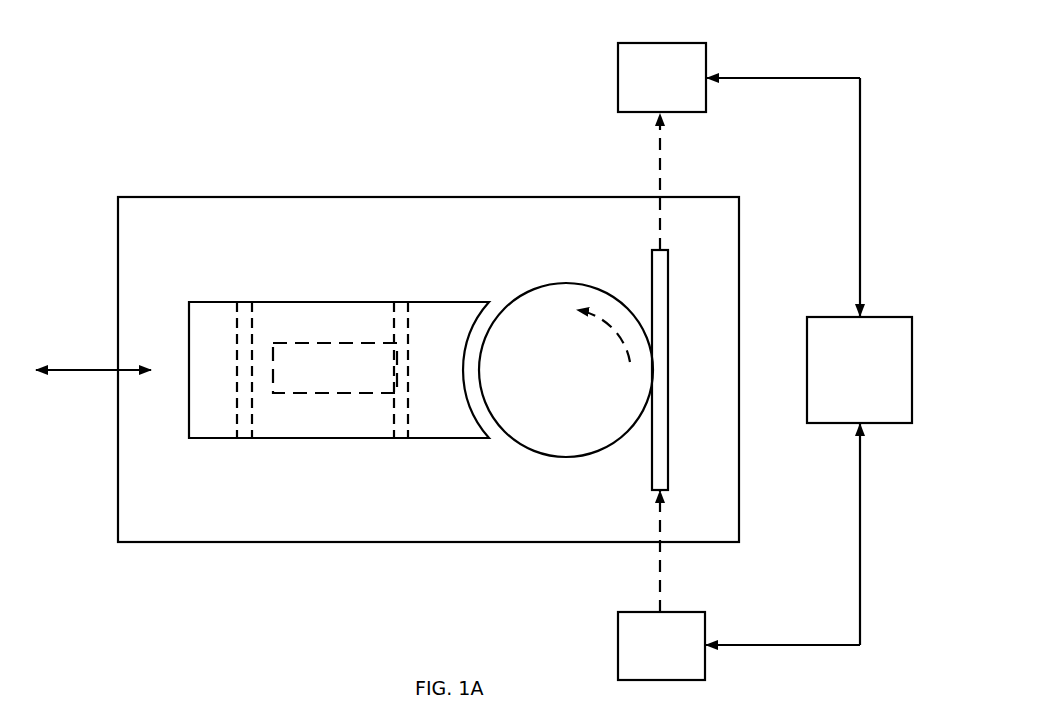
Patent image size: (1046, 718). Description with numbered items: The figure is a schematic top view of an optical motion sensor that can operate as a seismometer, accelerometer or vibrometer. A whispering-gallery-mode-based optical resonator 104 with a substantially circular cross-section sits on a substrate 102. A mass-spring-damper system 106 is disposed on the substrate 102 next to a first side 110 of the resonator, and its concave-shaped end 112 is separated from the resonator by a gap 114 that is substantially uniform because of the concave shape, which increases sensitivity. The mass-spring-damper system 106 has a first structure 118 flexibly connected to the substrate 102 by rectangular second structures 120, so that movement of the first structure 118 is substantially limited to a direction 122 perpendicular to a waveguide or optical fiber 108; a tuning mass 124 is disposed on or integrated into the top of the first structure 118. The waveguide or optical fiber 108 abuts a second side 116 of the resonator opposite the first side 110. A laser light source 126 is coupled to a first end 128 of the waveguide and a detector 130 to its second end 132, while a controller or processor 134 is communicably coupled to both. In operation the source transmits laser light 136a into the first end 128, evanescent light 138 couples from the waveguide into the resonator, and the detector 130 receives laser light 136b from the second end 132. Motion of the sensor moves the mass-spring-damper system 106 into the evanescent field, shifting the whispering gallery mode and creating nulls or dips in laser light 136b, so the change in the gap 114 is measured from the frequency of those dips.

The substrate 102 is at (150, 206).
The whispering-gallery-mode-based optical resonator 104 is at (565, 288).
The mass-spring-damper system 106 is at (191, 299).
The waveguide or optical fiber 108 is at (654, 274).
The first side 110 is at (482, 367).
The end 112 is at (465, 345).
The gap 114 is at (420, 371).
The second side 116 is at (651, 377).
The first structure 118 is at (200, 425).
The second structures 120 is at (404, 430).
The direction 122 is at (85, 370).
The tuning mass 124 is at (340, 345).
The laser light source 126 is at (636, 620).
The first end 128 is at (669, 490).
The detector 130 is at (636, 50).
The second end 132 is at (669, 250).
The controller or processor 134 is at (828, 320).
The laser light 136a is at (698, 551).
The laser light 136b is at (698, 182).
The evanescent light 138 is at (603, 336).